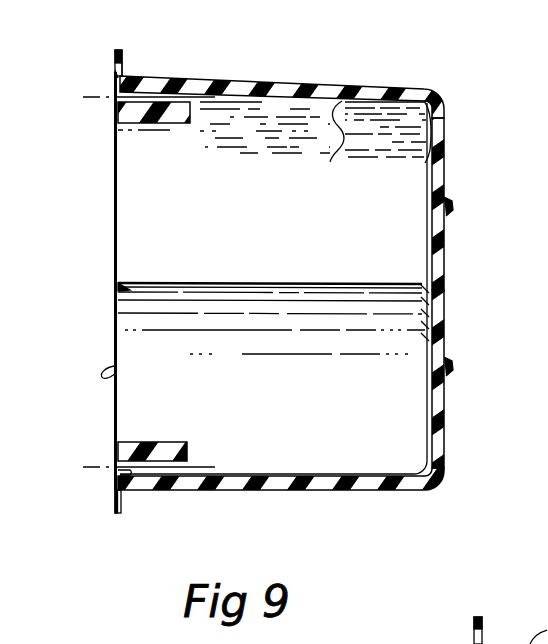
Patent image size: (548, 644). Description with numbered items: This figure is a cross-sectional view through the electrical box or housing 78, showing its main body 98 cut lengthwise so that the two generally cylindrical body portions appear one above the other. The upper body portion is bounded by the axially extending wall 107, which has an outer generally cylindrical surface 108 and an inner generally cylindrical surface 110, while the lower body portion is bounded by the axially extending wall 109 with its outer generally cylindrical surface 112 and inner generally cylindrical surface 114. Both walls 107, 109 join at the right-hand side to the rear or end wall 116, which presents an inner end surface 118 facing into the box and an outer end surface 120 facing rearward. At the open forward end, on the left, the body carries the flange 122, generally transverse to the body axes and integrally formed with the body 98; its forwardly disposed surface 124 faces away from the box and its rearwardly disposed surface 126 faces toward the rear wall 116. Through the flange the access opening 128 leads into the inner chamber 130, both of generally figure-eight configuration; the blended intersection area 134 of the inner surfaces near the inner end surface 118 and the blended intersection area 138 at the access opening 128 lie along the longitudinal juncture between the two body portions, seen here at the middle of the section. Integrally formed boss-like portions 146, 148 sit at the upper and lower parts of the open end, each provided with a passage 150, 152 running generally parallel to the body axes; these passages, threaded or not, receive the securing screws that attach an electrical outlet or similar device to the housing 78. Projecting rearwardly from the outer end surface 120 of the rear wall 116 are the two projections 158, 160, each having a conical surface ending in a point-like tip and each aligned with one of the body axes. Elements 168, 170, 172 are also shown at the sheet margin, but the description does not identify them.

The electrical box or housing 78 is at (435, 63).
The main body 98 is at (113, 324).
The axially extending wall 107 is at (300, 90).
The outer generally cylindrical surface 108 is at (282, 70).
The axially extending wall 109 is at (247, 485).
The inner generally cylindrical surface 110 is at (319, 180).
The outer generally cylindrical surface 112 is at (281, 513).
The inner generally cylindrical surface 114 is at (300, 383).
The rear or end wall 116 is at (436, 293).
The inner end surface means 118 is at (429, 224).
The outer end surface means 120 is at (444, 417).
The flange 122 is at (119, 50).
The forwardly disposed surface 124 is at (115, 72).
The rearwardly disposed surface 126 is at (123, 64).
The access opening 128 is at (117, 374).
The inner chamber 130 is at (328, 262).
The intersection area 134 is at (423, 286).
The intersection area 138 is at (117, 283).
The boss-like portion 146 is at (165, 124).
The boss-like portion 148 is at (165, 442).
The passage means 150 is at (115, 98).
The passage means 152 is at (112, 472).
The projection 158 is at (449, 196).
The projection 160 is at (449, 360).
The hinge pin 168 is at (470, 620).
The pin head 170 is at (479, 619).
The pin flange 172 is at (483, 635).